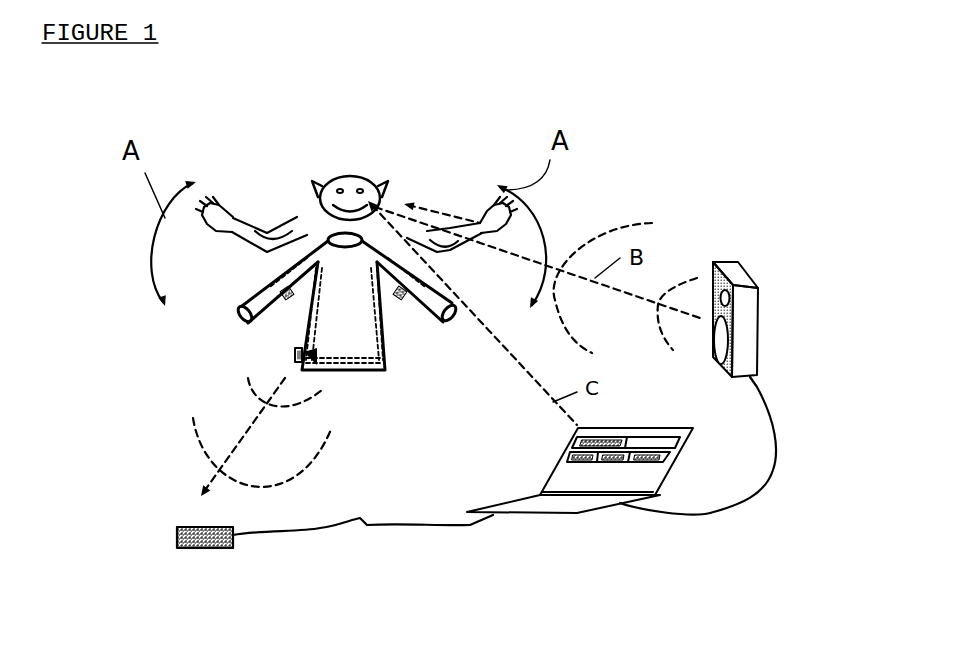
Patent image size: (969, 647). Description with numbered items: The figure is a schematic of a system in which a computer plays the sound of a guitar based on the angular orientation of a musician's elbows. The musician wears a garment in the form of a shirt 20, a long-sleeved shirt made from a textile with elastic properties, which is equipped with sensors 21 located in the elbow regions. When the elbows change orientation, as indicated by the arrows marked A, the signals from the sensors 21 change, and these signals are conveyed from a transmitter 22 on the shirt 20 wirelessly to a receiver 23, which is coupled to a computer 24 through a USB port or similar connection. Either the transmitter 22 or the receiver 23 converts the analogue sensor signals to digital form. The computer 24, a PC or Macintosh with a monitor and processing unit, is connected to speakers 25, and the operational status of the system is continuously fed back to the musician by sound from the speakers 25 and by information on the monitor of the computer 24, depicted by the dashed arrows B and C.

The shirt 20 is at (373, 375).
The sensors 21 is at (430, 313).
The transmitter 22 is at (293, 355).
The receiver 23 is at (215, 550).
The computer 24 is at (580, 515).
The speakers 25 is at (758, 313).